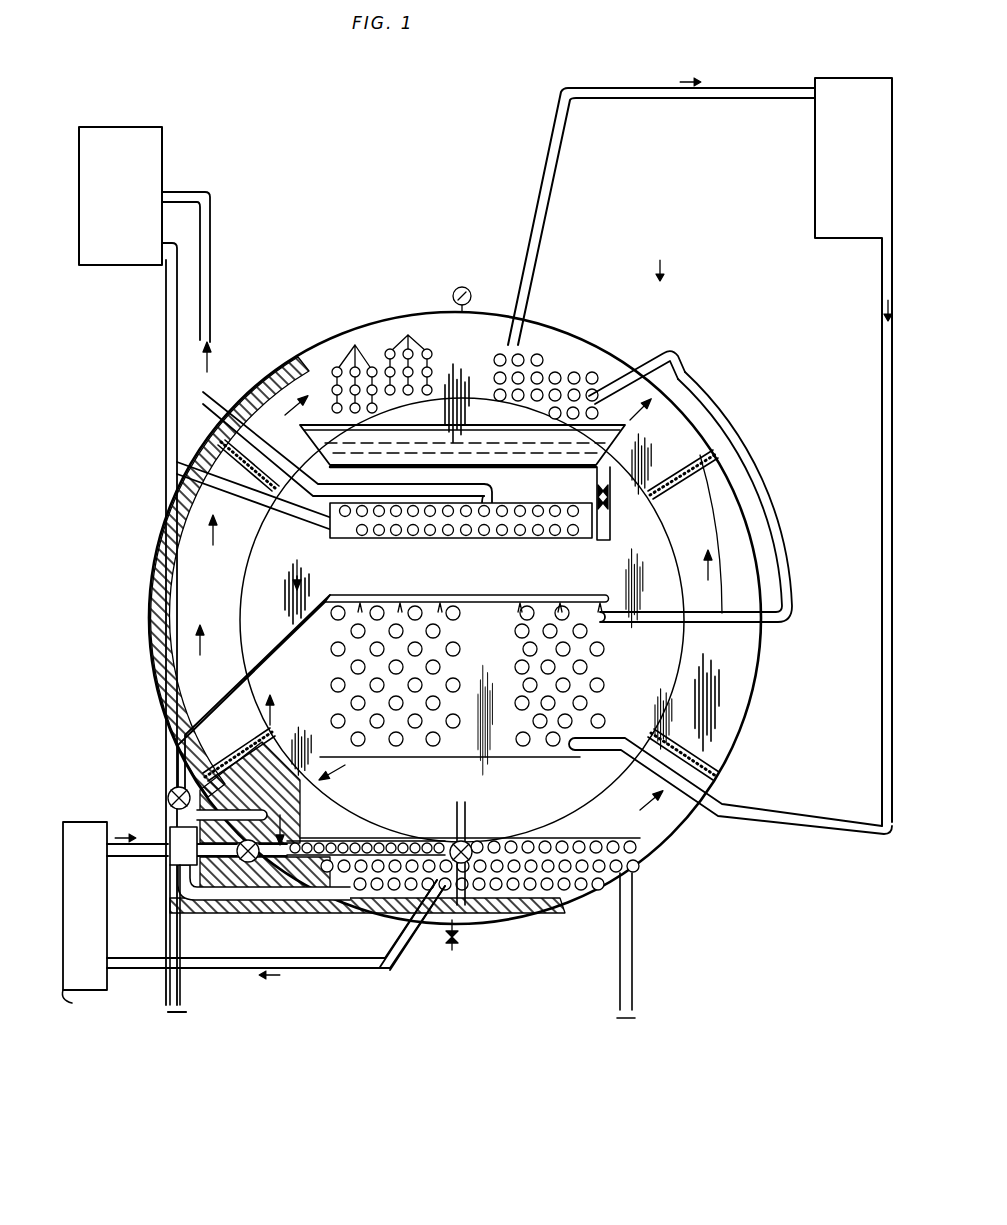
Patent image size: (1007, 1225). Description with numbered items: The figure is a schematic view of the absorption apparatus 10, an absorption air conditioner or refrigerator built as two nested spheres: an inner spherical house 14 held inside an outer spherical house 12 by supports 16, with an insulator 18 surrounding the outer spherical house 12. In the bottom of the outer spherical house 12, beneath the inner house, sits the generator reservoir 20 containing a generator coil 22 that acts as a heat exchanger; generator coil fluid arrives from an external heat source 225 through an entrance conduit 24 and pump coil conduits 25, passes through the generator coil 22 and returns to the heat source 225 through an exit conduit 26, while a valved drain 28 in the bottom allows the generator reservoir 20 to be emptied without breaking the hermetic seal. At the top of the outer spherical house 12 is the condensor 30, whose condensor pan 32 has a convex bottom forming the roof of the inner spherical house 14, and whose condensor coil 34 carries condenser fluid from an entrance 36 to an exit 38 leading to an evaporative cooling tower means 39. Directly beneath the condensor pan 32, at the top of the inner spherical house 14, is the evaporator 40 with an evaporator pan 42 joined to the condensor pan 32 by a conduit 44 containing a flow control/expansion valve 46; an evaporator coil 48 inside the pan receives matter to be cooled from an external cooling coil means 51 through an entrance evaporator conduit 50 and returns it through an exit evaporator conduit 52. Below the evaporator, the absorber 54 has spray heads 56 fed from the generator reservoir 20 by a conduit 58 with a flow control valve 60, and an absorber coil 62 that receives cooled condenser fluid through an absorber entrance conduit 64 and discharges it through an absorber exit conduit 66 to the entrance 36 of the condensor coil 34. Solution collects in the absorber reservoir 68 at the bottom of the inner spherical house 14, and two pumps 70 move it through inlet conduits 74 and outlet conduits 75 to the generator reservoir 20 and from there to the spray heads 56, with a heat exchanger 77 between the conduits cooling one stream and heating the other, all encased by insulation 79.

The absorption apparatus 10 is at (333, 330).
The outer spherical house 12 is at (160, 598).
The inner spherical house 14 is at (232, 640).
The supports 16 is at (235, 460).
The insulator 18 is at (158, 522).
The generator reservoir 20 is at (510, 895).
The generator coil 22 is at (635, 880).
The entrance conduit 24 is at (85, 906).
The pump coil conduits 25 is at (150, 835).
The exit conduit 26 is at (395, 950).
The drain 28 is at (460, 950).
The condensor 30 is at (548, 360).
The condensor pan 32 is at (665, 443).
The condensor coil 34 is at (390, 372).
The entrance 36 is at (672, 350).
The exit 38 is at (497, 350).
The evaporative cooling tower means 39 is at (853, 452).
The evaporator 40 is at (355, 345).
The evaporator pan 42 is at (555, 540).
The conduit 44 is at (750, 512).
The flow control/expansion valve 46 is at (603, 540).
The evaporator coil 48 is at (363, 540).
The entrance evaporator conduit 50 is at (166, 330).
The cooling coil means 51 is at (120, 196).
The exit evaporator conduit 52 is at (248, 385).
The absorber 54 is at (690, 688).
The spray heads 56 is at (490, 604).
The conduit 58 is at (175, 915).
The flow control valve 60 is at (168, 790).
The absorber coil 62 is at (670, 672).
The absorber entrance conduit 64 is at (885, 560).
The absorber exit conduit 66 is at (790, 630).
The absorber reservoir 68 is at (450, 782).
The pumps 70 is at (472, 900).
The inlet conduits 74 is at (468, 816).
The outlet conduits 75 is at (430, 843).
The heat exchanger 77 is at (165, 865).
The insulation 79 is at (265, 652).
The heat source 225 is at (78, 1010).